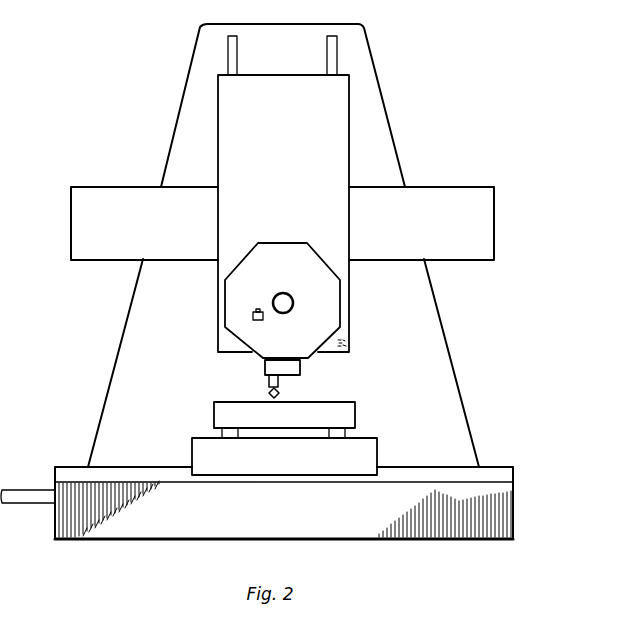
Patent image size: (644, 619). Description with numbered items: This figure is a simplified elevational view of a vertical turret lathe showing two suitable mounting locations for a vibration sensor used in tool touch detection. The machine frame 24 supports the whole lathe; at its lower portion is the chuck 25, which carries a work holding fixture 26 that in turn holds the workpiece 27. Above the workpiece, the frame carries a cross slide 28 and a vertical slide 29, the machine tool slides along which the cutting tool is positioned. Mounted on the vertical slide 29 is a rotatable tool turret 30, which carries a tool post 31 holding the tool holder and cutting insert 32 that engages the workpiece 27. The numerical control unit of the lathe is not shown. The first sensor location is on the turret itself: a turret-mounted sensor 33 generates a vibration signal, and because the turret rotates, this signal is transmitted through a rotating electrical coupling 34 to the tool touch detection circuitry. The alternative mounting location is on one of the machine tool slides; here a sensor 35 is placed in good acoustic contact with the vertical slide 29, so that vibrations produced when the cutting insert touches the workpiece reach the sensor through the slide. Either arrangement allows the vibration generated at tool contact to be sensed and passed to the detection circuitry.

The machine frame 24 is at (513, 500).
The chuck 25 is at (378, 448).
The work holding fixture 26 is at (222, 434).
The workpiece 27 is at (357, 413).
The cross slide 28 is at (486, 213).
The vertical slide 29 is at (346, 137).
The rotatable tool turret 30 is at (298, 243).
The tool post 31 is at (300, 367).
The tool holder and cutting insert 32 is at (279, 383).
The turret-mounted sensor 33 is at (256, 308).
The rotating electrical coupling 34 is at (293, 297).
The sensor 35 is at (347, 338).